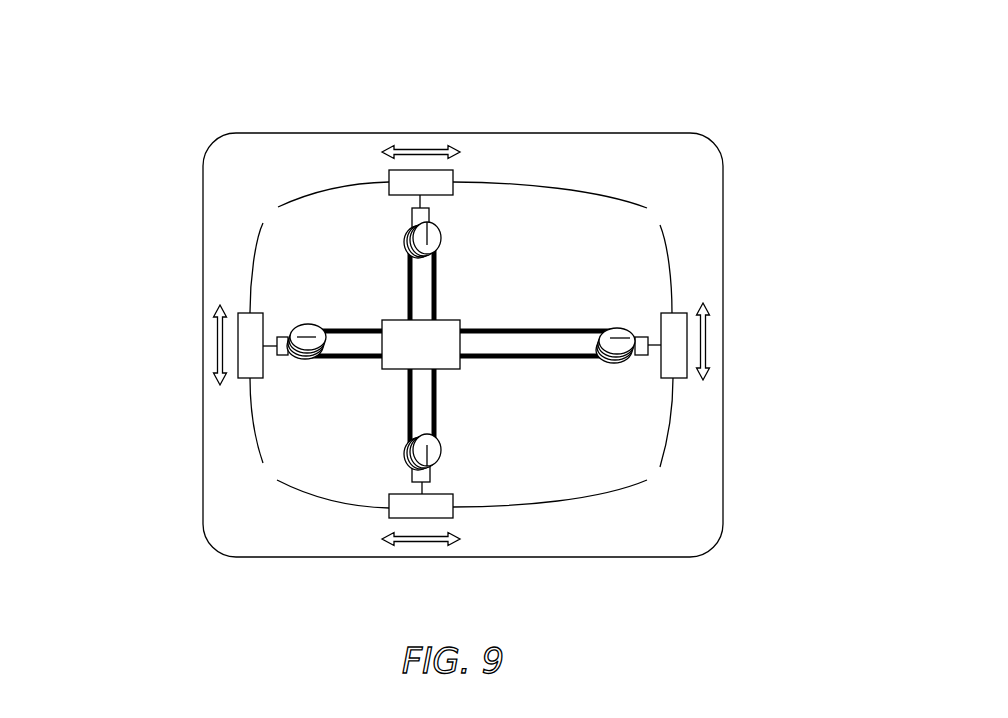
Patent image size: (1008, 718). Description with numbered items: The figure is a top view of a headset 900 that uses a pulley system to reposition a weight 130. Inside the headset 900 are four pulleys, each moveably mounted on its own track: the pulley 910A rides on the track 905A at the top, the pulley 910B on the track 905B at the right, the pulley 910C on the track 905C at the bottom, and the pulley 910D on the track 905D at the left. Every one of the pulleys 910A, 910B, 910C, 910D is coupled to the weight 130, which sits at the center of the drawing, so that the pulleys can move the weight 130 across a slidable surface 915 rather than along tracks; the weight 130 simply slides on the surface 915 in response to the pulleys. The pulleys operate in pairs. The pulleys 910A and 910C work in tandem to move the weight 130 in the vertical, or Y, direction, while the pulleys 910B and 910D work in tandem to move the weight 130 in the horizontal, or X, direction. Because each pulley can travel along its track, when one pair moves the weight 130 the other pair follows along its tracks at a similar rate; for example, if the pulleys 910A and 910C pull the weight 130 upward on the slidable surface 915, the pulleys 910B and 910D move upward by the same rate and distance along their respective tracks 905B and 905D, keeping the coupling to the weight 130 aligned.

The headset 900 is at (506, 133).
The track 905A is at (558, 183).
The track 905B is at (672, 435).
The track 905C is at (542, 507).
The track 905D is at (252, 413).
The pulley 910A is at (388, 178).
The pulley 910B is at (680, 382).
The pulley 910C is at (388, 511).
The pulley 910D is at (243, 312).
The slidable surface 915 is at (632, 245).
The weight 130 is at (453, 370).